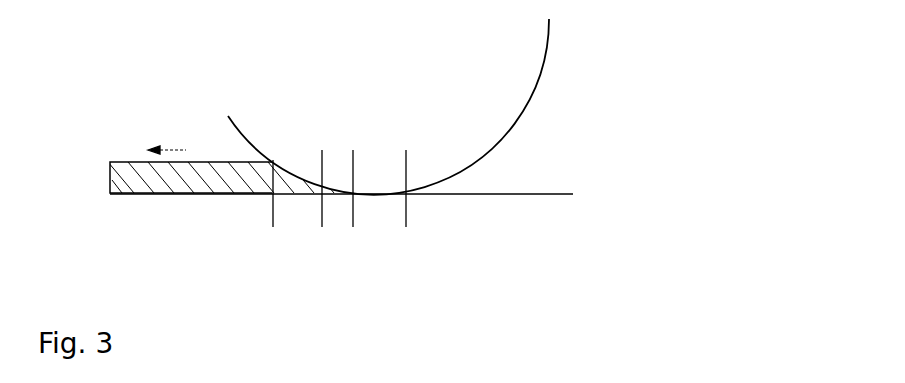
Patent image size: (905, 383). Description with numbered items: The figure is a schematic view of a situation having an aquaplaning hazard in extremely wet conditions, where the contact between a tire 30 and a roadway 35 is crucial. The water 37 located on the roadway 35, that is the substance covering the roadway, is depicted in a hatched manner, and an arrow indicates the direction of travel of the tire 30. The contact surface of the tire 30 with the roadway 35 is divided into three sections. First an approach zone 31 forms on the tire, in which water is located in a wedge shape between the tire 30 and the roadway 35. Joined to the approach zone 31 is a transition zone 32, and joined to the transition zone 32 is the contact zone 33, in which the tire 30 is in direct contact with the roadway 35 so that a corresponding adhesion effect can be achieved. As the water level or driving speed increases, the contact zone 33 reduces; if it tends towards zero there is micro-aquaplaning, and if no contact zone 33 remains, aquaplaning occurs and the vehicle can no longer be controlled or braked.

The tire 30 is at (499, 133).
The approach zone 31 is at (297, 218).
The transition zone 32 is at (338, 218).
The contact zone 33 is at (382, 218).
The roadway 35 is at (531, 196).
The water 37 is at (172, 182).